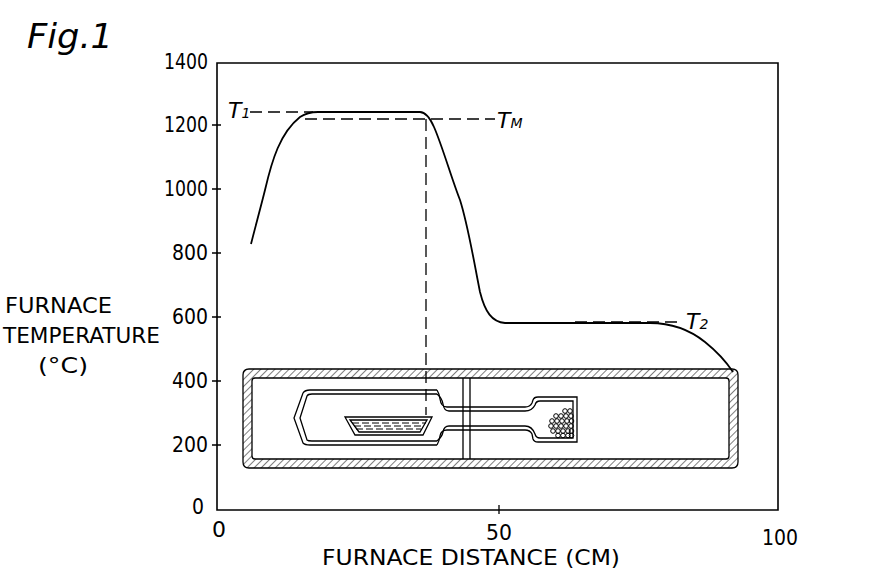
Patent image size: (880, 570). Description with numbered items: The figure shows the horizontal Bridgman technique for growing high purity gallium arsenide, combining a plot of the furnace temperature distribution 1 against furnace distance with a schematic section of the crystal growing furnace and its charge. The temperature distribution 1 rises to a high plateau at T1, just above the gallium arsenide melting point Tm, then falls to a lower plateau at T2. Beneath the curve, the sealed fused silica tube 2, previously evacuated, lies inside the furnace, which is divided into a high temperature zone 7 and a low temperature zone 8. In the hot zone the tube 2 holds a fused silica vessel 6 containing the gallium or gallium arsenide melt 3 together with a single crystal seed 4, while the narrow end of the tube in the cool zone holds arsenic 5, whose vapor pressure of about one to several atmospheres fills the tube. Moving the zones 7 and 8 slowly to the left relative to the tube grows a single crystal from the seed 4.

The temperature distribution 1 is at (472, 238).
The sealed fused silica tube 2 is at (322, 390).
The gallium or gallium arsenide melt 3 is at (378, 423).
The single crystal seed 4 is at (444, 398).
The arsenic 5 is at (576, 425).
The fused silica vessel 6 is at (350, 424).
The high temperature zone 7 is at (282, 440).
The low temperature zone 8 is at (647, 445).